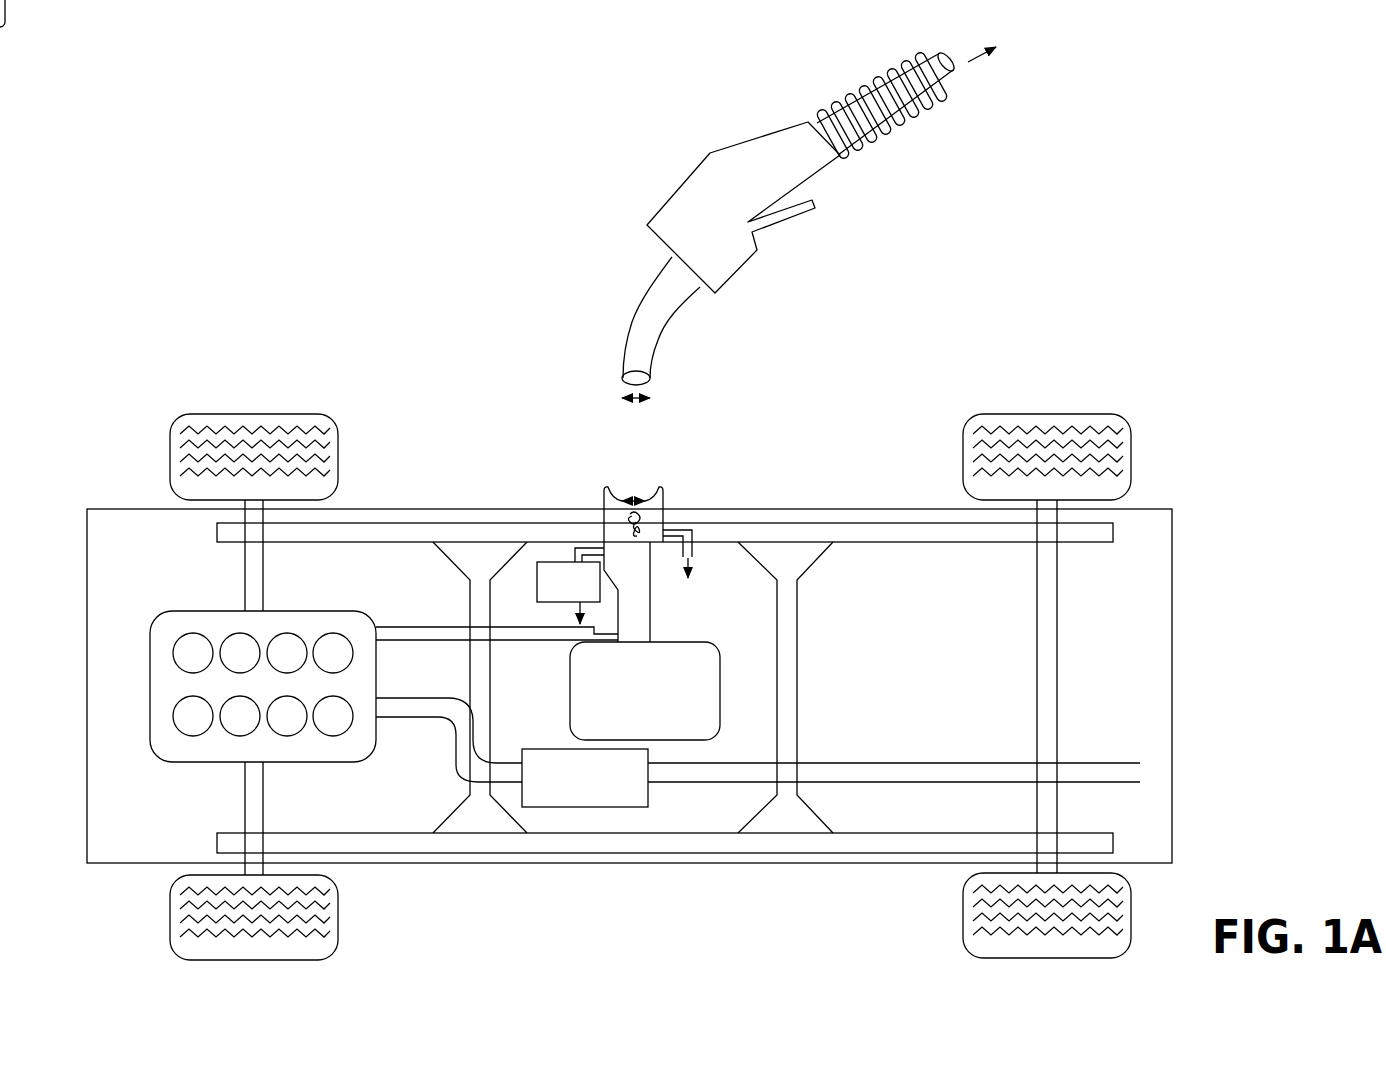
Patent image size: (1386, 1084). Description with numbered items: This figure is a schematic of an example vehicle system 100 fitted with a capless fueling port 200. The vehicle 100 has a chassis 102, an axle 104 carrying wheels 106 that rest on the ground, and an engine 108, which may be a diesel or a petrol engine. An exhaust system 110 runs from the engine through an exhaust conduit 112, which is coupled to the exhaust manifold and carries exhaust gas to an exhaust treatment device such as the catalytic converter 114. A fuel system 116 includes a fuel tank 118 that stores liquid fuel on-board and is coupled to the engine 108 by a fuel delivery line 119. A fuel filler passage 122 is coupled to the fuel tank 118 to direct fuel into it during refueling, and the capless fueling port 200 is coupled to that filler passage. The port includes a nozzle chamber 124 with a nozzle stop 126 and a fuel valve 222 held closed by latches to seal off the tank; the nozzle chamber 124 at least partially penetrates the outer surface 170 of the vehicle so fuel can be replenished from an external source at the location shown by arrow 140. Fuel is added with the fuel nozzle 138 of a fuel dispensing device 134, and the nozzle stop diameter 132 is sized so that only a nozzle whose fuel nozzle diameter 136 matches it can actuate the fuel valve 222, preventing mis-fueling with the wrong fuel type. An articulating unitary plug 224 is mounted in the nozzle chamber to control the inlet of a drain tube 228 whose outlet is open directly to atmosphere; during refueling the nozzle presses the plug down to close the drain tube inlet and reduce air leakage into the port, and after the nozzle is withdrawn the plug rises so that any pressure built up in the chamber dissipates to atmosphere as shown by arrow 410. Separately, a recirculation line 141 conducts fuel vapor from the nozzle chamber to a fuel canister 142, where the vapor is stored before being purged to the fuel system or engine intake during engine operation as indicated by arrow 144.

The vehicle system 100 is at (236, 291).
The chassis 102 is at (440, 523).
The axle 104 is at (243, 592).
The wheels 106 is at (170, 458).
The engine 108 is at (150, 693).
The exhaust system 110 is at (522, 733).
The exhaust conduit 112 is at (424, 698).
The catalytic converter 114 is at (831, 778).
The fuel system 116 is at (722, 632).
The fuel tank 118 is at (645, 691).
The fuel delivery line 119 is at (446, 626).
The fuel filler passage 122 is at (651, 627).
The nozzle chamber 124 is at (659, 500).
The nozzle stop 126 is at (614, 484).
The nozzle stop diameter 132 is at (633, 498).
The fuel dispensing device 134 is at (662, 198).
The fuel nozzle diameter 136 is at (630, 401).
The fuel nozzle 138 is at (640, 302).
The external fuel source location arrow 140 is at (968, 62).
The recirculation line 141 is at (575, 548).
The fuel canister 142 is at (568, 582).
The vapor purge arrow 144 is at (575, 614).
The outer surface 170 is at (803, 509).
The capless fueling port 200 is at (511, 427).
The fuel valve 222 is at (641, 545).
The articulating unitary plug 224 is at (626, 521).
The drain tube 228 is at (693, 530).
The pressure dissipation arrow 410 is at (692, 568).